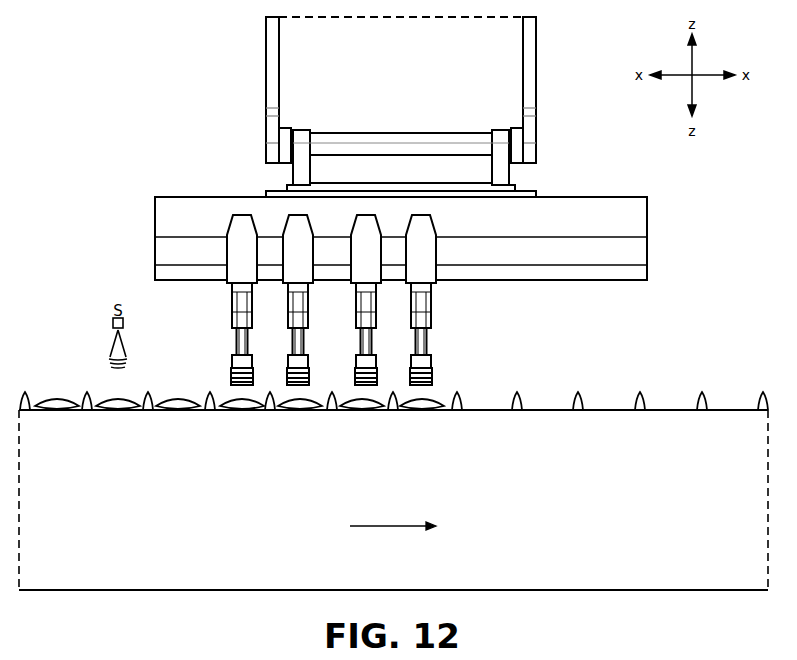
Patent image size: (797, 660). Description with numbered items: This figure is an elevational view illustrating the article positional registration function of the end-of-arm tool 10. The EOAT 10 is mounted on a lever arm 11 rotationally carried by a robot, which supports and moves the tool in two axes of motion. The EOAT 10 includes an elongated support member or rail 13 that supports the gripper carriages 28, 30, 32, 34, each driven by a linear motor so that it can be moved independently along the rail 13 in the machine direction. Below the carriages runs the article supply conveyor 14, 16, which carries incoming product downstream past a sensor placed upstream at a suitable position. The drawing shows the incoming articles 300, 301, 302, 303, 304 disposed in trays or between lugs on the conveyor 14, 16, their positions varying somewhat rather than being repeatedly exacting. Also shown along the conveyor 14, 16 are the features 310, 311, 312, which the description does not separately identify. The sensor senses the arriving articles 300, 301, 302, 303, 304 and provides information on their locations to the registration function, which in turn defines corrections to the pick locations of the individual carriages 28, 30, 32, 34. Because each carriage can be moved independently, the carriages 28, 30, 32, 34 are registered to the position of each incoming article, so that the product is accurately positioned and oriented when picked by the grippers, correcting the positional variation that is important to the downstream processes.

The end-of-arm tool 10 is at (121, 170).
The lever arm 11 is at (266, 117).
The support member or rail 13 is at (607, 196).
The carriage 28 is at (437, 244).
The carriage 30 is at (382, 243).
The carriage 32 is at (314, 244).
The carriage 34 is at (226, 244).
The first article supply conveyor 14 is at (393, 475).
The second article supply conveyor 16 is at (718, 409).
The article 300 is at (422, 412).
The article 301 is at (362, 412).
The article 302 is at (300, 412).
The article 303 is at (242, 412).
The article 304 is at (178, 412).
The protrusion 310 is at (609, 394).
The protrusion 311 is at (552, 394).
The protrusion 312 is at (495, 394).